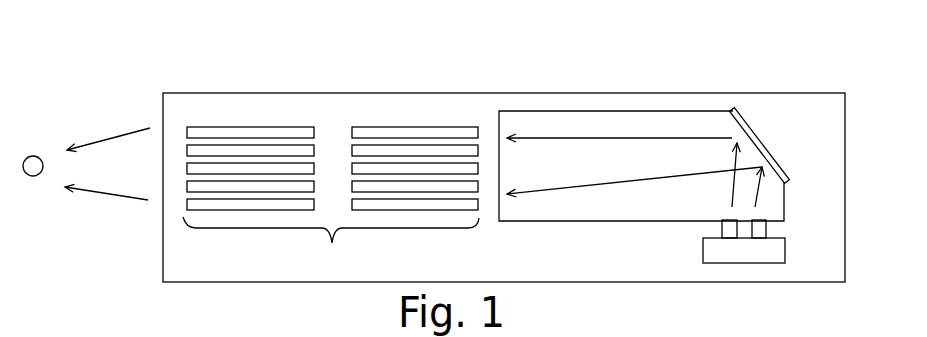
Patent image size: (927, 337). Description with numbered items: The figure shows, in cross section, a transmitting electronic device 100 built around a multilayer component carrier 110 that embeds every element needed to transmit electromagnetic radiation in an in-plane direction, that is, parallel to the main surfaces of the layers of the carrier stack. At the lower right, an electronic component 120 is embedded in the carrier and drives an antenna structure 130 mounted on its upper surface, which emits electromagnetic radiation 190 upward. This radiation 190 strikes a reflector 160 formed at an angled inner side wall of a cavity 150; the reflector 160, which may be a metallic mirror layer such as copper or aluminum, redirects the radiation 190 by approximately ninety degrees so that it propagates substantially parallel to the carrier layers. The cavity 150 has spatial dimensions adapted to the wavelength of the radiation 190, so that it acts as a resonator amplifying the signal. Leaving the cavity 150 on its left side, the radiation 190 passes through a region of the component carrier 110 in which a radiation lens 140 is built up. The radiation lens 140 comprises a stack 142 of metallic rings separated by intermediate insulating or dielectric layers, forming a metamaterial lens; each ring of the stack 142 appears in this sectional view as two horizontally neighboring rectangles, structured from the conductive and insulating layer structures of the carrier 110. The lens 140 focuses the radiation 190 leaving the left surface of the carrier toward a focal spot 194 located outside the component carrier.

The transmitting electronic device 100 is at (852, 89).
The multilayer component carrier 110 is at (805, 94).
The electronic component 120 is at (785, 250).
The antenna structure 130 is at (767, 232).
The radiation lens 140 is at (331, 248).
The stack of metallic rings 142 is at (254, 119).
The cavity 150 is at (523, 111).
The reflector 160 is at (748, 117).
The electromagnetic radiation 190 is at (107, 196).
The focal spot 194 is at (32, 156).